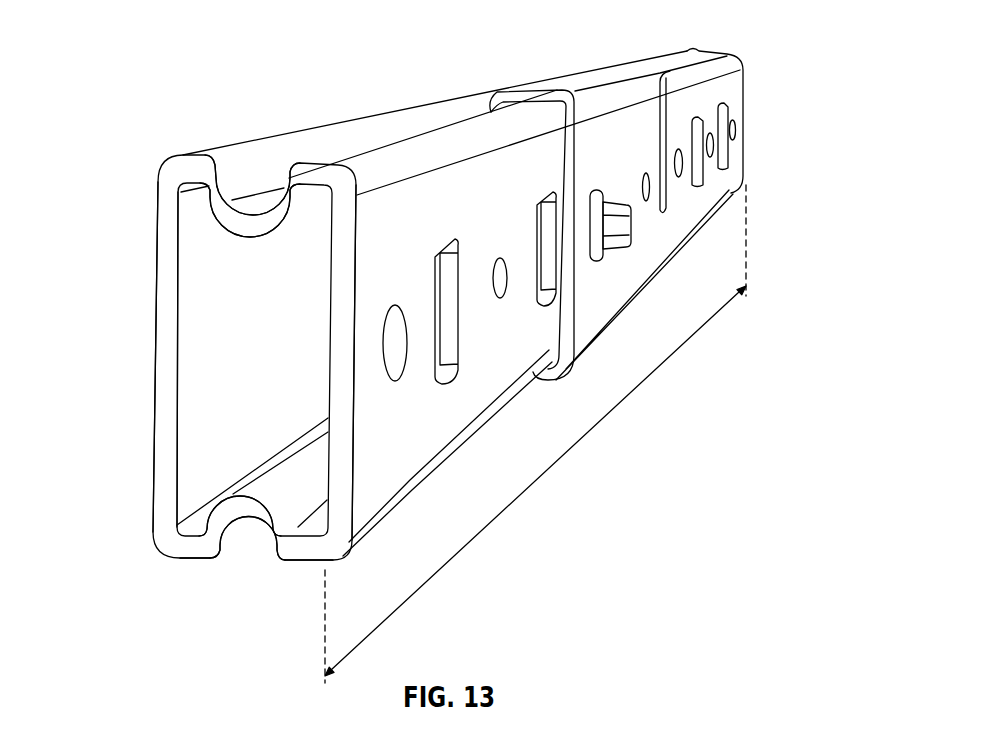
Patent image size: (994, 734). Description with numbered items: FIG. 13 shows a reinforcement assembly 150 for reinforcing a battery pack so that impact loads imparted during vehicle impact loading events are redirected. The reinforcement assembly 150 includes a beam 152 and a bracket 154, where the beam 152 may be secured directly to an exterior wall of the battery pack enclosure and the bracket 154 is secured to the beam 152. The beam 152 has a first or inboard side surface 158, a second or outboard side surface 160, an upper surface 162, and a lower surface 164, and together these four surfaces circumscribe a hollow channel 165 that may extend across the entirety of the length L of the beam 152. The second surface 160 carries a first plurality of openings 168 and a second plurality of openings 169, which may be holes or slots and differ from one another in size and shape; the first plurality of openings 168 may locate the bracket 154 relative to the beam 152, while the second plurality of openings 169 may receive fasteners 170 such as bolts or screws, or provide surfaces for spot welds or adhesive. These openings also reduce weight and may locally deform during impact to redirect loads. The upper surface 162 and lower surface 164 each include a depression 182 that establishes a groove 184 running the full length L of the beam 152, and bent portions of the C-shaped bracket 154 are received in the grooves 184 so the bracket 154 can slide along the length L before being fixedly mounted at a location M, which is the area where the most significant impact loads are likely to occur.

The reinforcement assembly 150 is at (725, 37).
The beam 152 is at (150, 358).
The bracket 154 is at (637, 127).
The first side surface 158 is at (157, 250).
The second side surface 160 is at (687, 208).
The upper surface 162 is at (293, 135).
The lower surface 164 is at (193, 560).
The hollow channel 165 is at (266, 367).
The first plurality of openings 168 is at (467, 335).
The second plurality of openings 169 is at (414, 348).
The fastener 170 is at (629, 224).
The depression 182 is at (263, 224).
The groove 184 is at (263, 192).
The location M is at (537, 71).
The length L is at (538, 482).